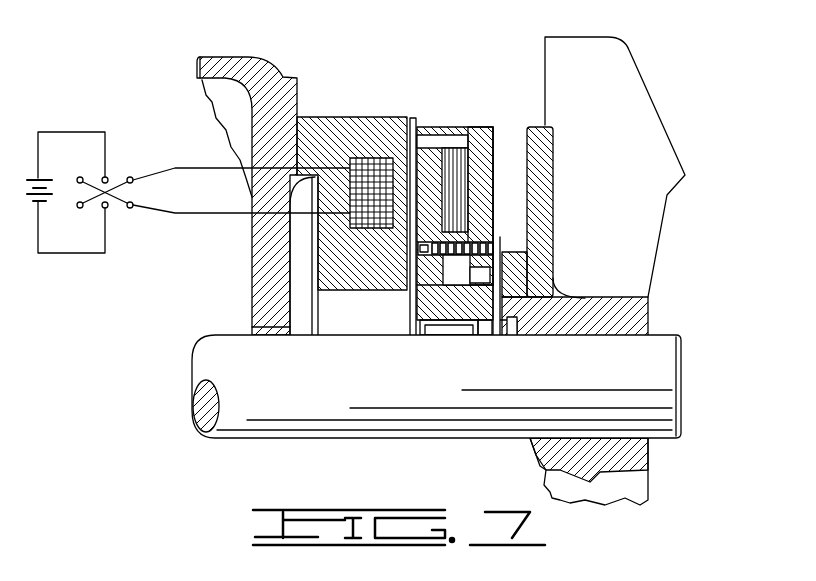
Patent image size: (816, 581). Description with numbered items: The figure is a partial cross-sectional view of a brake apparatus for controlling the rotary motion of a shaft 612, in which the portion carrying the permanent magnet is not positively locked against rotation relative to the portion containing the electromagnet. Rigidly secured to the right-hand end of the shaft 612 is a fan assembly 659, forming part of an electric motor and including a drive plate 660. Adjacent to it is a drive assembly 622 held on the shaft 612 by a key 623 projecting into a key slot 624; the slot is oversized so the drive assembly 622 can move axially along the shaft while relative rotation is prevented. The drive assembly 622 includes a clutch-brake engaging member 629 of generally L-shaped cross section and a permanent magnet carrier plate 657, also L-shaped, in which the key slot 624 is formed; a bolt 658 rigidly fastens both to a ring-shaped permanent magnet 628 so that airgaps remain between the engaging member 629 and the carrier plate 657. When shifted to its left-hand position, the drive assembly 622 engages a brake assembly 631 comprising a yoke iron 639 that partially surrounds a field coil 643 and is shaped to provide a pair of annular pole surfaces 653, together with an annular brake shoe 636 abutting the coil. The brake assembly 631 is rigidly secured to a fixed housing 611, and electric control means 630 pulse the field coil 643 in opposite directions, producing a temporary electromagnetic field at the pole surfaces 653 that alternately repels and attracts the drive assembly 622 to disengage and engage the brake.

The fixed housing 611 is at (229, 54).
The shaft 612 is at (310, 400).
The drive assembly 622 is at (516, 164).
The key 623 is at (433, 338).
The key slot 624 is at (458, 336).
The ring-shaped permanent magnet 628 is at (460, 188).
The clutch-brake engaging member 629 is at (480, 143).
The electric control means 630 is at (128, 222).
The brake assembly 631 is at (305, 184).
The annular brake shoe 636 is at (400, 237).
The yoke iron 639 is at (313, 125).
The field coil 643 is at (360, 214).
The annular pole surfaces 653 is at (414, 117).
The permanent magnet carrier plate 657 is at (438, 305).
The bolt 658 is at (490, 243).
The fan assembly 659 is at (649, 85).
The drive plate 660 is at (518, 268).